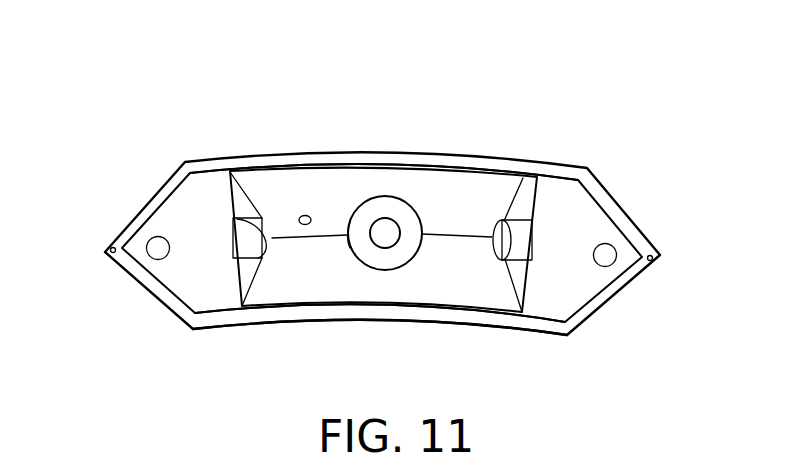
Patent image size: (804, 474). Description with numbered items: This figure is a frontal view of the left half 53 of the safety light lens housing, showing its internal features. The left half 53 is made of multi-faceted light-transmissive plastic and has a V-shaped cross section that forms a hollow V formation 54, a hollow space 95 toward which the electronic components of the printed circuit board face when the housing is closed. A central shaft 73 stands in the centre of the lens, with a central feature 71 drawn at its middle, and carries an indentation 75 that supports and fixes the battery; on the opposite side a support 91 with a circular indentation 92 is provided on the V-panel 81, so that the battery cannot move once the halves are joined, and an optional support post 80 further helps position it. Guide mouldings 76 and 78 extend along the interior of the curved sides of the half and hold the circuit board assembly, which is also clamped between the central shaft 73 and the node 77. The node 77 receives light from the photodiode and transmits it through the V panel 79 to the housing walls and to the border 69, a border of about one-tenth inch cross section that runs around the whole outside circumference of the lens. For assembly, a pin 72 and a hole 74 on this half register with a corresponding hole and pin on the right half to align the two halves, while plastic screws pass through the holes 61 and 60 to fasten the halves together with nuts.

The left half 53 is at (455, 95).
The hollow V formation 54 is at (467, 217).
The hole 60 is at (608, 253).
The hole 61 is at (150, 256).
The border 69 is at (550, 337).
The hub bore 71 is at (394, 228).
The pin 72 is at (112, 245).
The central shaft 73 is at (390, 198).
The hole 74 is at (650, 261).
The indentation 75 is at (347, 240).
The guide moulding 76 is at (280, 165).
The node 77 is at (524, 240).
The guide moulding 78 is at (433, 307).
The V panel 79 is at (530, 196).
The support post 80 is at (307, 214).
The V-panel 81 is at (256, 182).
The support 91 is at (272, 240).
The circular indentation 92 is at (263, 311).
The hollow space 95 is at (470, 272).